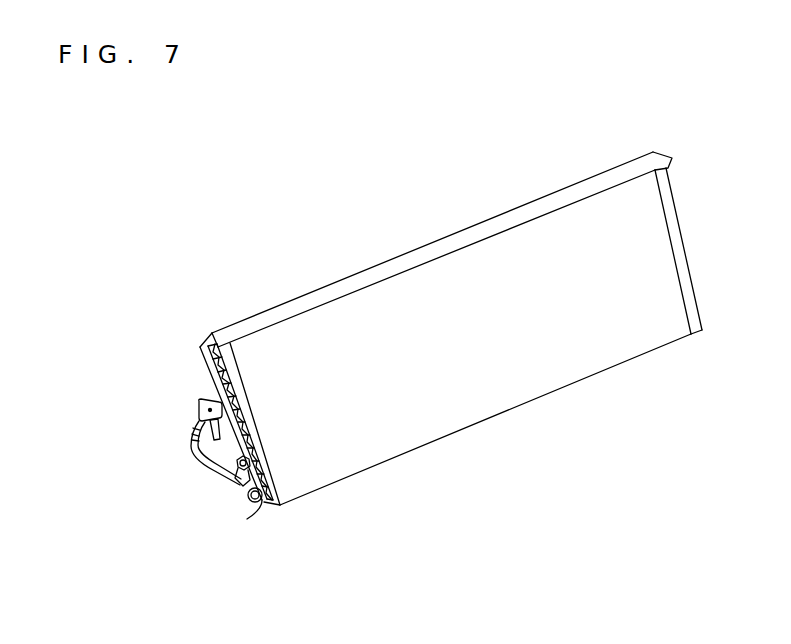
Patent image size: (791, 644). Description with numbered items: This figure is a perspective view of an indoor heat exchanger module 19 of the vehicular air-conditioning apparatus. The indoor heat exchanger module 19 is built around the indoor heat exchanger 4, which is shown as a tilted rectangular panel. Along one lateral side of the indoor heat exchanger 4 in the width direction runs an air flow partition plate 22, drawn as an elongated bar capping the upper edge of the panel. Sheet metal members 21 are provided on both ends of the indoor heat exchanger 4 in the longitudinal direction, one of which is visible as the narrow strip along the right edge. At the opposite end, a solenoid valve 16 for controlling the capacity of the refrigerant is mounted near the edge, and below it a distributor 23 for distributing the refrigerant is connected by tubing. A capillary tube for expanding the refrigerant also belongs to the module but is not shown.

The indoor heat exchanger 4 is at (507, 412).
The indoor heat exchanger module 19 is at (361, 256).
The air flow partition plate 22 is at (664, 154).
The sheet metal members 21 is at (683, 245).
The solenoid valve 16 is at (200, 401).
The distributor 23 is at (236, 483).